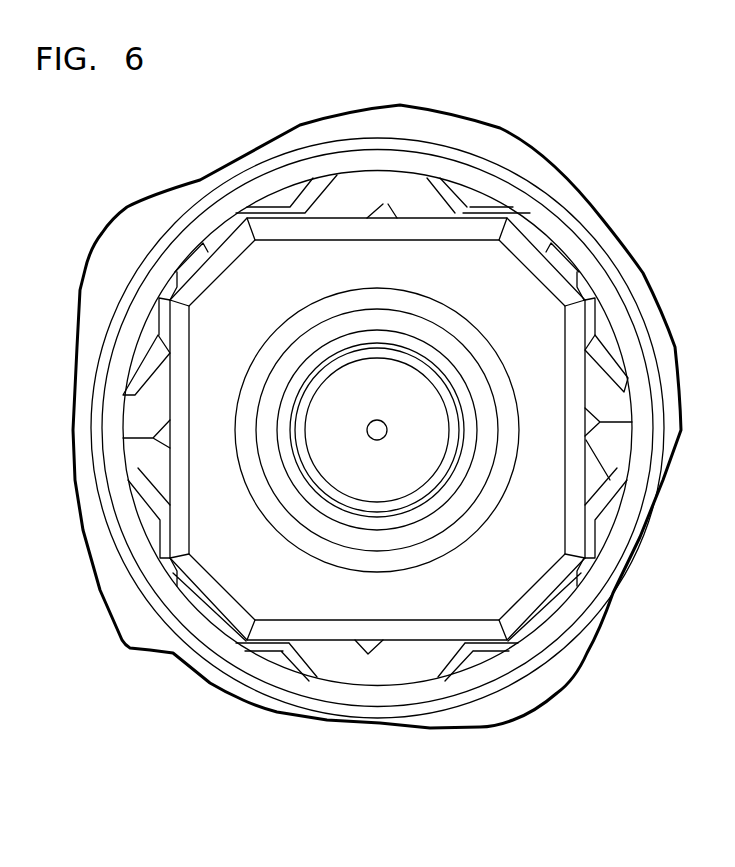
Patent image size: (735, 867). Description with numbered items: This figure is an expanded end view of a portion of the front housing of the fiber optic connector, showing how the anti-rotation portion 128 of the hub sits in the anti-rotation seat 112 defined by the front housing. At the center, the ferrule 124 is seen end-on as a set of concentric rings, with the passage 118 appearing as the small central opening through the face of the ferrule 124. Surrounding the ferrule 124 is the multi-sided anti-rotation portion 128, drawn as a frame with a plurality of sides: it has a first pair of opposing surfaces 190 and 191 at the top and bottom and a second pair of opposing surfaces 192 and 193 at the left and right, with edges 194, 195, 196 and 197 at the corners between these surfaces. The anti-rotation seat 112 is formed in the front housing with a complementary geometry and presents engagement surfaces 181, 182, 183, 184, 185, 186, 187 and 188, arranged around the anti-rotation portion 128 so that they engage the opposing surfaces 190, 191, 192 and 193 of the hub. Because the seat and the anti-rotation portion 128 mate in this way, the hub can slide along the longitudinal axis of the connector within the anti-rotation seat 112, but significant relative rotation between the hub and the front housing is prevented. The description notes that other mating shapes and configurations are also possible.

The anti-rotation seat 112 is at (165, 436).
The passage 118 is at (379, 424).
The ferrule 124 is at (412, 465).
The anti-rotation portion 128 is at (547, 348).
The engagement surface 181 is at (162, 323).
The engagement surface 182 is at (162, 540).
The engagement surface 183 is at (268, 640).
The engagement surface 184 is at (475, 640).
The engagement surface 185 is at (590, 540).
The engagement surface 186 is at (592, 317).
The engagement surface 187 is at (485, 214).
The engagement surface 188 is at (278, 214).
The opposing surface 190 is at (383, 216).
The opposing surface 191 is at (368, 654).
The opposing surface 192 is at (168, 370).
The opposing surface 193 is at (587, 420).
The edge 194 is at (203, 253).
The edge 195 is at (203, 608).
The edge 196 is at (548, 252).
The edge 197 is at (550, 603).